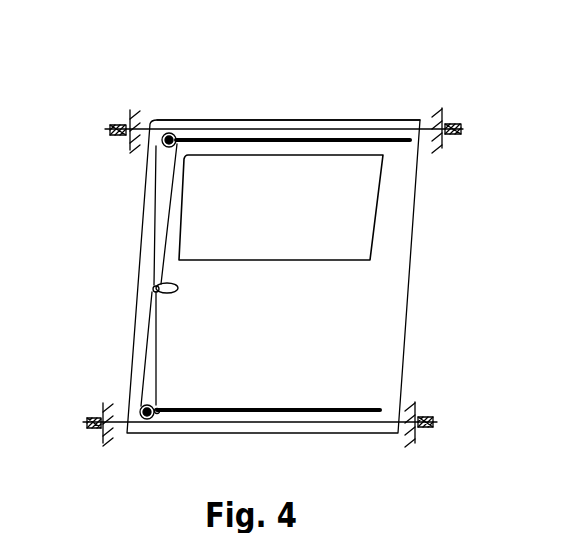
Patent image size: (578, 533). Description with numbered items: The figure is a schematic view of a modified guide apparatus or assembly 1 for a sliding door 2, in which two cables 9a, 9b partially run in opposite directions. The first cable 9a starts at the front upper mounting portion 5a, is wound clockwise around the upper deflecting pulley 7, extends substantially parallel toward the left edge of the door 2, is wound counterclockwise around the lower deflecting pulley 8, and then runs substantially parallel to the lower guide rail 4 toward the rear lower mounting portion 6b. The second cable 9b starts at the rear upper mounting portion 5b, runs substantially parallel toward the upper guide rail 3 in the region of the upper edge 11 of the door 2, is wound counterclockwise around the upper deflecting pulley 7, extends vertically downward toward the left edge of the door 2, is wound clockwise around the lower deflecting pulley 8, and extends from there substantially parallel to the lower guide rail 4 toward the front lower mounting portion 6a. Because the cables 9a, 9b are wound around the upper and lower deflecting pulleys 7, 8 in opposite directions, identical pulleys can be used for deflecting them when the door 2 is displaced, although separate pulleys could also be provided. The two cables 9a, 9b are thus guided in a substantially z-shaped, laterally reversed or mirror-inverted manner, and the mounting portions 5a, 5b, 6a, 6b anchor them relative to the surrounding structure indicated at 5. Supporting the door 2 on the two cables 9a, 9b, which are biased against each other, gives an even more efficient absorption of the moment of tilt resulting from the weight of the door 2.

The guide apparatus or assembly 1 is at (560, 33).
The door 2 is at (398, 293).
The upper guide rail 3 is at (242, 138).
The lower guide rail 4 is at (313, 412).
The door frame 5 is at (572, 530).
The front upper mounting portion 5a is at (125, 127).
The rear upper mounting portion 5b is at (452, 126).
The front lower mounting portion 6a is at (97, 418).
The rear lower mounting portion 6b is at (418, 413).
The upper deflecting pulley 7 is at (173, 135).
The lower deflecting pulley 8 is at (158, 408).
The first cable 9a is at (147, 352).
The second cable 9b is at (157, 202).
The upper edge 11 is at (318, 122).